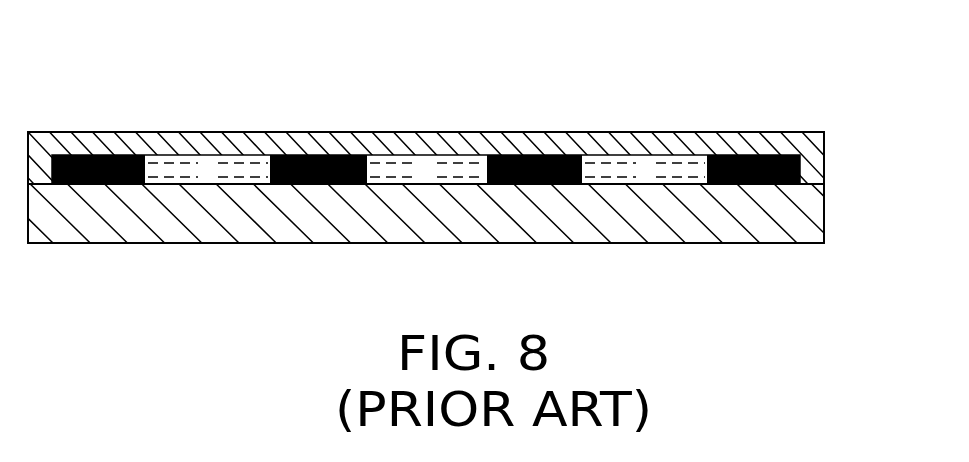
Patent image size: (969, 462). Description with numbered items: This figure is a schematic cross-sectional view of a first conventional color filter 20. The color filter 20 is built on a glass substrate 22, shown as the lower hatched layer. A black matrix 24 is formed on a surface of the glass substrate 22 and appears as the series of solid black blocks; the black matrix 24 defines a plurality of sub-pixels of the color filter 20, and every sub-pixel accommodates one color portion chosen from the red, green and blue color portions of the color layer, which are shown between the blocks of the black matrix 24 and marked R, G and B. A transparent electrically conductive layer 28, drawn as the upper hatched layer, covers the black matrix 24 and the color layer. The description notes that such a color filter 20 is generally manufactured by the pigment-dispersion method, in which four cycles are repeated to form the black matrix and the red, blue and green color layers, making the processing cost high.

The color filter 20 is at (431, 52).
The glass substrate 22 is at (787, 217).
The black matrix 24 is at (800, 160).
The transparent electrically conductive layer 28 is at (615, 145).